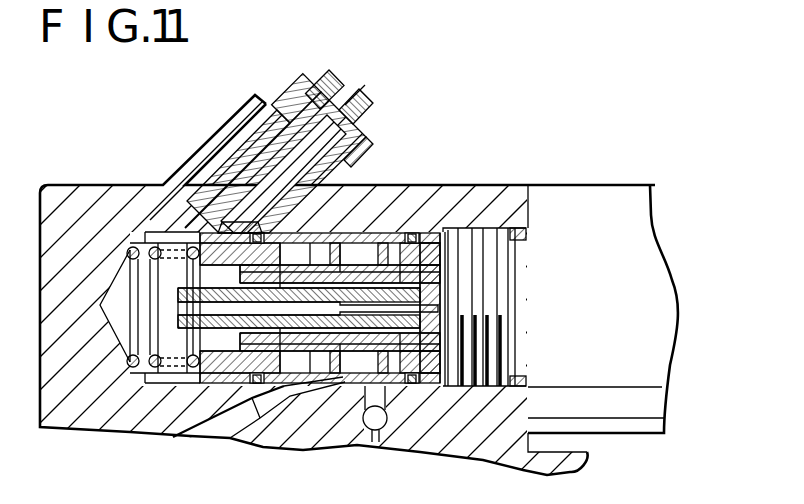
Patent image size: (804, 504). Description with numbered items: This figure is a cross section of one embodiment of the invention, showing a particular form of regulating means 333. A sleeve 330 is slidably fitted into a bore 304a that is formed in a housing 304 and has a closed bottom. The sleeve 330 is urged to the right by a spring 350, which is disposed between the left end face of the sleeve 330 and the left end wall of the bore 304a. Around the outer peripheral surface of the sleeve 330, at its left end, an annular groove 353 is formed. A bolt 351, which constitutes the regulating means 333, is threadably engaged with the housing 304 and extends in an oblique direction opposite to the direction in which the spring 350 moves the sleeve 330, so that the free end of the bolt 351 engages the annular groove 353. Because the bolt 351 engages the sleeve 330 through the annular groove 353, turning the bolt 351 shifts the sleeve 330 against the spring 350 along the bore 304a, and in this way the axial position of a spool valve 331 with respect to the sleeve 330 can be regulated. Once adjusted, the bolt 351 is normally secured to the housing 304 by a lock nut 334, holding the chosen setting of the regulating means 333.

The housing 304 is at (411, 184).
The bore 304a is at (447, 238).
The sleeve 330 is at (202, 381).
The spool valve 331 is at (267, 360).
The regulating means 333 is at (366, 96).
The lock nut 334 is at (291, 87).
The spring 350 is at (145, 233).
The bolt 351 is at (333, 72).
The annular groove 353 is at (240, 231).